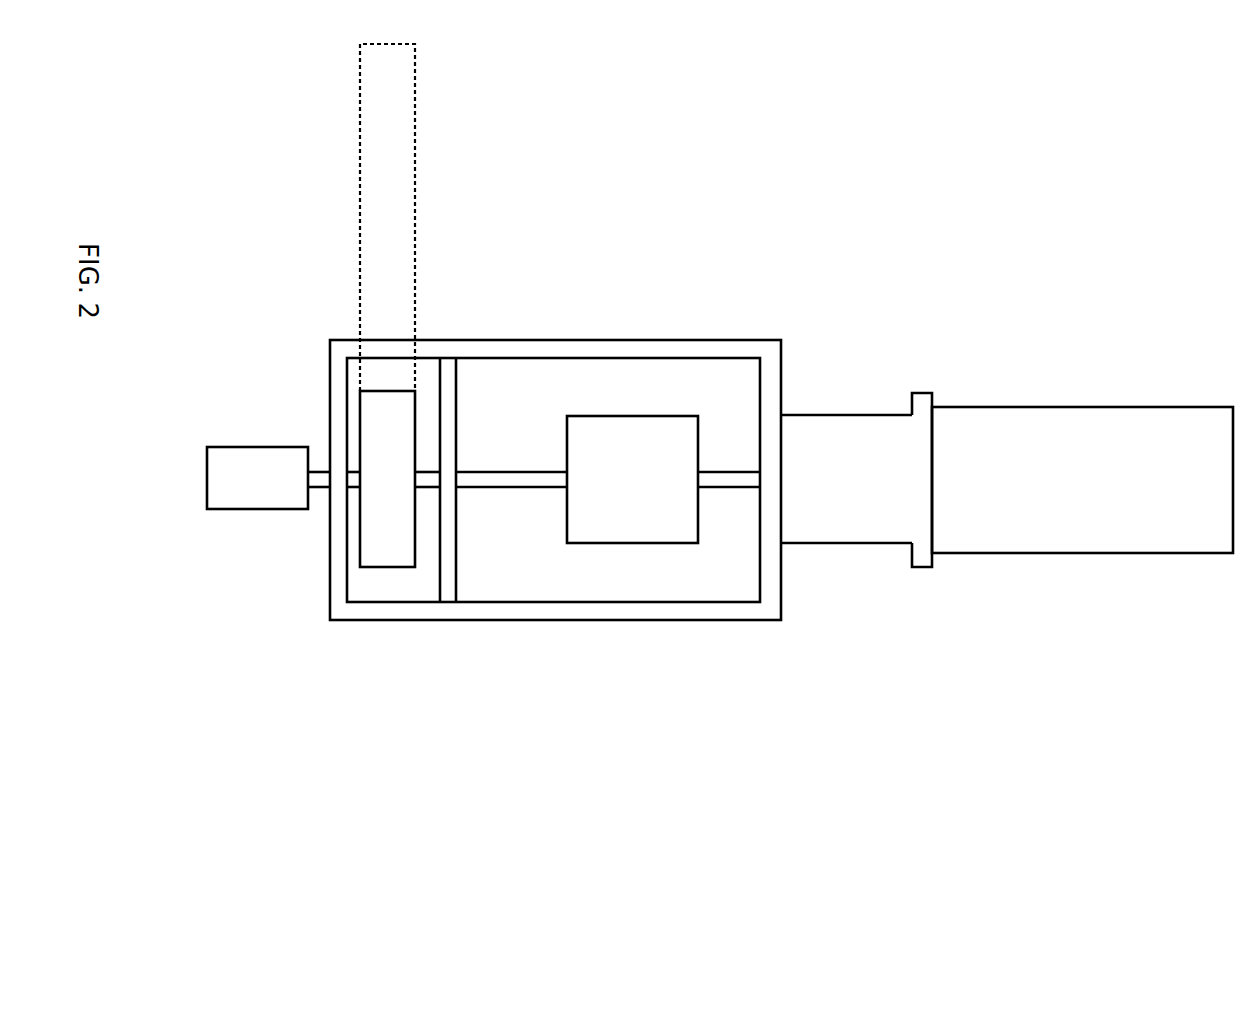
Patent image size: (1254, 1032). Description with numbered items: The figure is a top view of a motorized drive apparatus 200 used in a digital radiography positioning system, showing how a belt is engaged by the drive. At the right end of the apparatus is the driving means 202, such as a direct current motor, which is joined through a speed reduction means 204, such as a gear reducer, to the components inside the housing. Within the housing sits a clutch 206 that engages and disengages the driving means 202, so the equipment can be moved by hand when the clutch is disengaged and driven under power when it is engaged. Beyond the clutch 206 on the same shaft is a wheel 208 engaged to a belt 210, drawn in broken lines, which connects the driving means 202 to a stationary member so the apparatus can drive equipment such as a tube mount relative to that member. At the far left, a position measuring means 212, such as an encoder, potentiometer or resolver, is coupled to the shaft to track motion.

The motorized drive apparatus 200 is at (678, 479).
The driving means 202 is at (1091, 526).
The speed reduction means 204 is at (848, 505).
The clutch 206 is at (622, 520).
The wheel 208 is at (388, 567).
The belt 210 is at (415, 267).
The position measuring means 212 is at (246, 473).